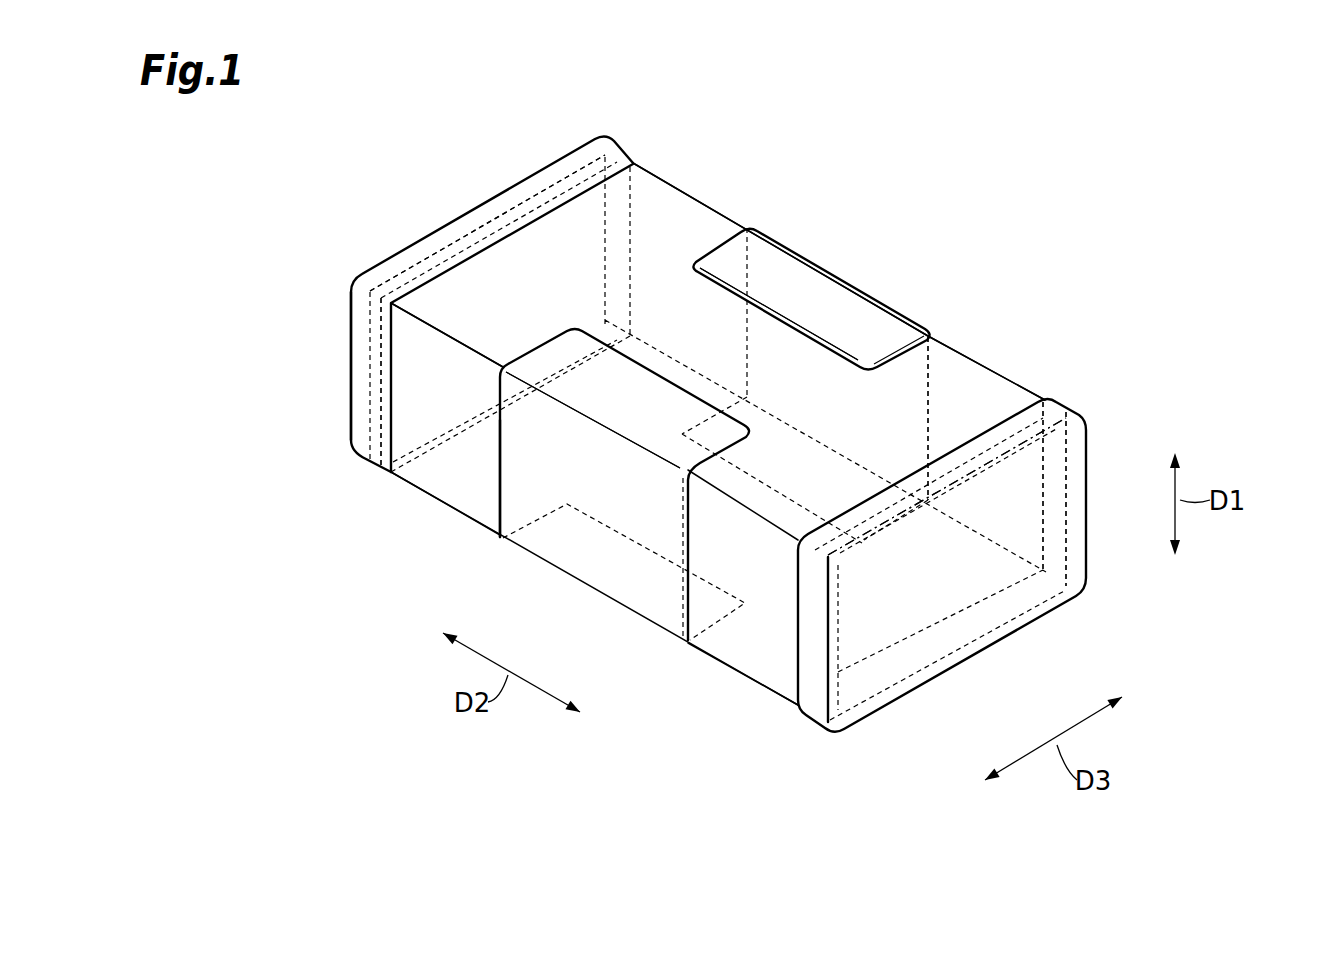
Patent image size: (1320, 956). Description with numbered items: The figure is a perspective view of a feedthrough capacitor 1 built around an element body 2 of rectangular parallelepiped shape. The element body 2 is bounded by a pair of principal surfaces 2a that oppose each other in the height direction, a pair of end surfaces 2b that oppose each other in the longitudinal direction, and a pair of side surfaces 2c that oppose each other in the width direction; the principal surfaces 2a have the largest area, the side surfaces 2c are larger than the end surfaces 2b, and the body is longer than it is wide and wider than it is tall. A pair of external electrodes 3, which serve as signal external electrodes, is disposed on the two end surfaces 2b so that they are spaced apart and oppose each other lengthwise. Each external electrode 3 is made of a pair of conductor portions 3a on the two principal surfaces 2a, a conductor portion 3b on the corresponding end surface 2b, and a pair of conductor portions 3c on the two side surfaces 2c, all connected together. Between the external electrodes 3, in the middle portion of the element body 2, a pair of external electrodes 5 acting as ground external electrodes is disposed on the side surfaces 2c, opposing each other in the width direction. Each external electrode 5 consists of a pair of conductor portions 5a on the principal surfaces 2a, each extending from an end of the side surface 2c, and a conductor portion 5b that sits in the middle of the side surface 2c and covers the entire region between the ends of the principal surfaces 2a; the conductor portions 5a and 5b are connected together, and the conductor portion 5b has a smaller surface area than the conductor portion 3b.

The feedthrough capacitor 1 is at (1094, 229).
The element body 2 is at (1021, 373).
The principal surfaces 2a is at (681, 220).
The end surfaces 2b is at (508, 280).
The side surfaces 2c is at (467, 465).
The external electrodes 3 is at (553, 178).
The conductor portions 3a is at (392, 273).
The conductor portion 3b is at (417, 350).
The conductor portions 3c is at (360, 413).
The external electrodes 5 is at (802, 273).
The conductor portions 5a is at (760, 263).
The conductor portion 5b is at (548, 465).